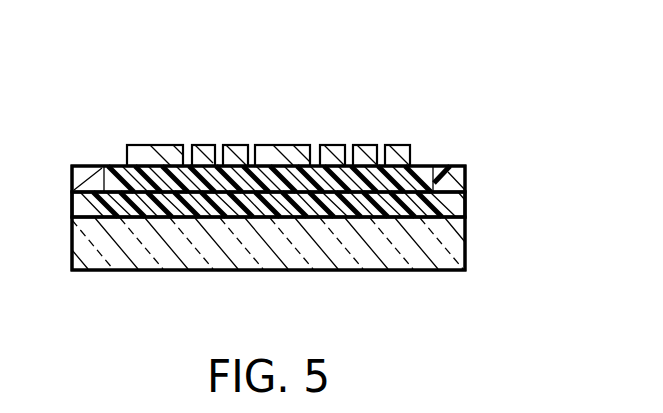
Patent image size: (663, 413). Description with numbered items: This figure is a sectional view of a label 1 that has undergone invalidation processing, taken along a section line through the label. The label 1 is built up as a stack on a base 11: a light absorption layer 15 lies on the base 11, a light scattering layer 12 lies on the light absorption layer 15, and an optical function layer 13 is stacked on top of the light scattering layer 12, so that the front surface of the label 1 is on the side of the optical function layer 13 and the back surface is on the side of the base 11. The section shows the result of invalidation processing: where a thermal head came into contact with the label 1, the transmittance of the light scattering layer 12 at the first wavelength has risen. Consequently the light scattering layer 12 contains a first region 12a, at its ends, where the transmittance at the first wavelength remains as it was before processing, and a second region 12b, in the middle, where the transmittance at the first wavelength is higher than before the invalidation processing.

The label 1 is at (539, 83).
The base 11 is at (466, 250).
The light scattering layer 12 is at (466, 175).
The first region 12a is at (97, 186).
The second region 12b is at (264, 192).
The optical function layer 13 is at (411, 153).
The light absorption layer 15 is at (466, 200).